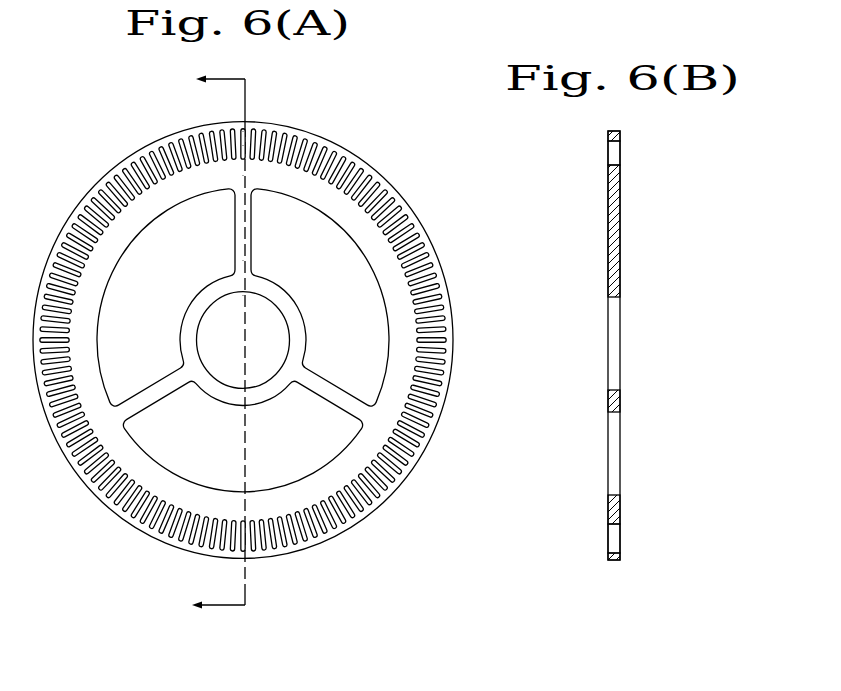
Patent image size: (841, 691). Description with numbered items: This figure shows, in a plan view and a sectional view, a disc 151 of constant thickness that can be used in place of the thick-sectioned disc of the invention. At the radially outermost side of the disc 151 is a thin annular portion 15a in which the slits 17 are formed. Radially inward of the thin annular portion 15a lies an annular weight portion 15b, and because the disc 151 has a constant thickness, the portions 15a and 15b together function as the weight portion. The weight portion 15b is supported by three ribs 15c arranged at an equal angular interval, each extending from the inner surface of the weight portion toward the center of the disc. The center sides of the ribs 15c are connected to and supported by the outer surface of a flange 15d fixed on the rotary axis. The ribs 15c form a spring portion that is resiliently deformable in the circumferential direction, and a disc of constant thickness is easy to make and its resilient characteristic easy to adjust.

In FIG. 6A, the disc 151 is at (251, 340).
In FIG. 6B, the disc 151 is at (620, 345).
In FIG. 6B, the slits 17 is at (607, 545).
In FIG. 6B, the thin annular portion 15a is at (620, 557).
In FIG. 6B, the annular weight portion 15b is at (607, 507).
In FIG. 6A, the ribs 15c is at (251, 262).
In FIG. 6B, the ribs 15c is at (630, 197).
In FIG. 6B, the flange 15d is at (620, 402).